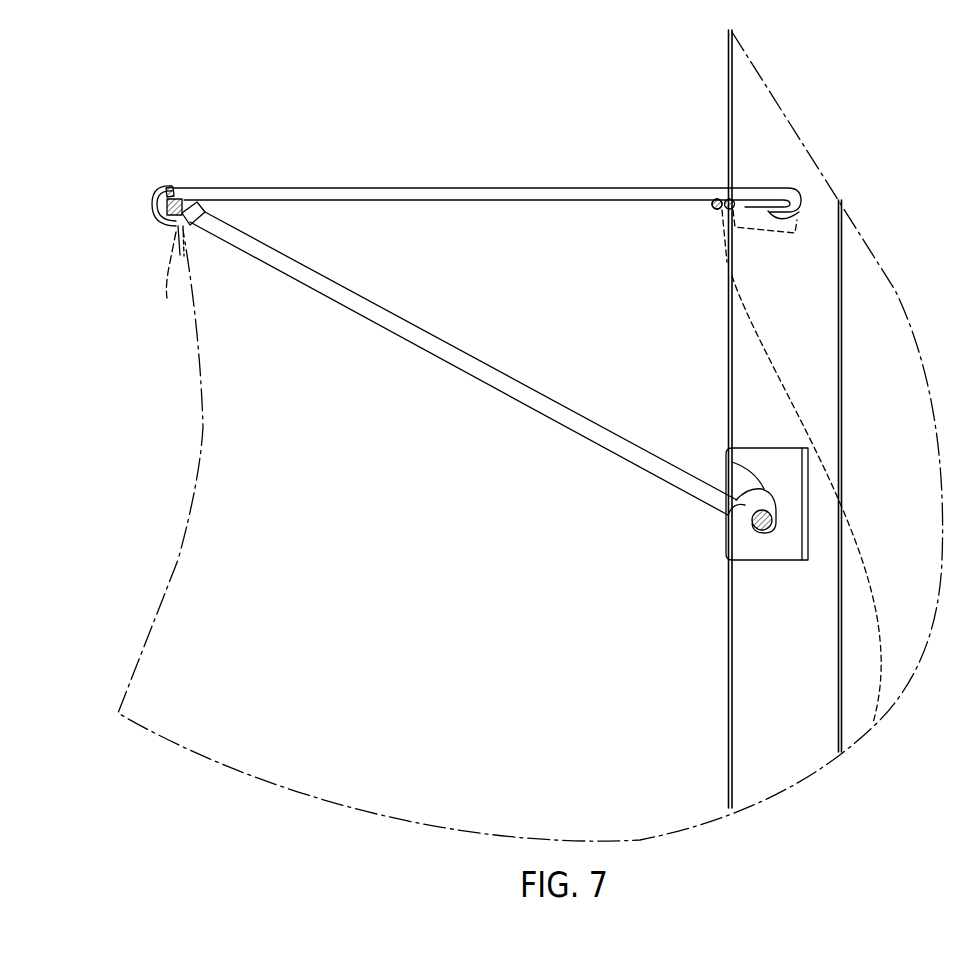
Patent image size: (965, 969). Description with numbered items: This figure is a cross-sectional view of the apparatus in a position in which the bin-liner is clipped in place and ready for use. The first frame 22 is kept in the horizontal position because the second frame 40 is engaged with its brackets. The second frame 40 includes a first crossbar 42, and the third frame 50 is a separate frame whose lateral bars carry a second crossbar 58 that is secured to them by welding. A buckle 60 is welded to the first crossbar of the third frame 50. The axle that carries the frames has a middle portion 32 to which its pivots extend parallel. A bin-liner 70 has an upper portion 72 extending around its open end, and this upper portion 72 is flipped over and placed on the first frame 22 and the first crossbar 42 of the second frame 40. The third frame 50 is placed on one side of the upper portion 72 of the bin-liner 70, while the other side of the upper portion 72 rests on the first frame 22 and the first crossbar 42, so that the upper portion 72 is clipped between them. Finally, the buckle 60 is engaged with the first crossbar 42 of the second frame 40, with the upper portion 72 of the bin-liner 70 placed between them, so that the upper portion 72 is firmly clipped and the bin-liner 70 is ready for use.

The first frame 22 is at (199, 208).
The middle portion 32 is at (733, 202).
The second frame 40 is at (390, 320).
The first crossbar 42 is at (157, 208).
The third frame 50 is at (360, 192).
The second crossbar 58 is at (716, 206).
The buckle 60 is at (168, 243).
The bin-liner 70 is at (201, 428).
The upper portion 72 is at (800, 222).